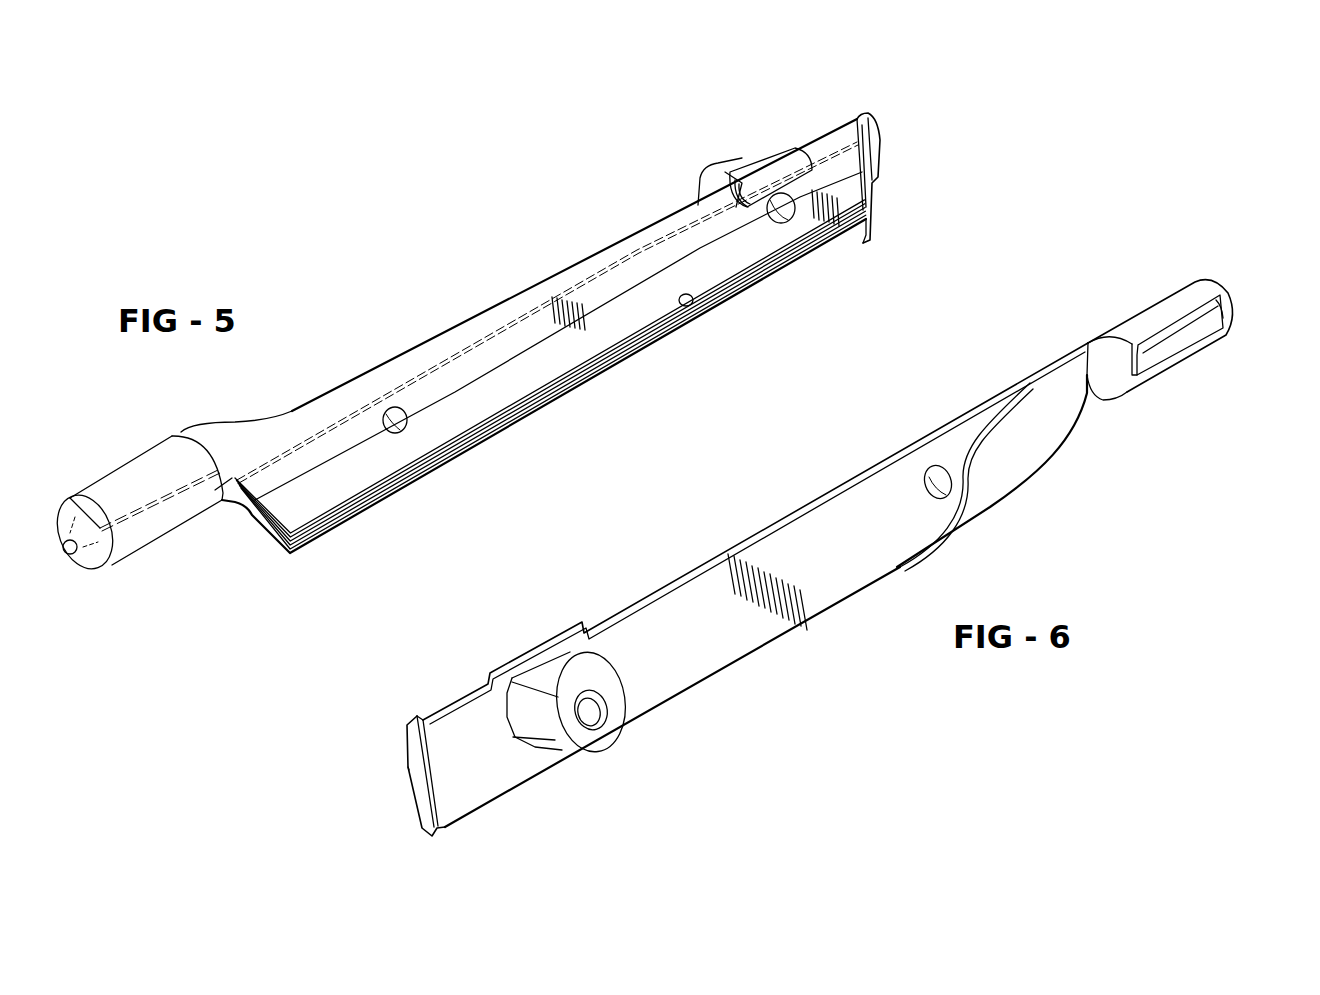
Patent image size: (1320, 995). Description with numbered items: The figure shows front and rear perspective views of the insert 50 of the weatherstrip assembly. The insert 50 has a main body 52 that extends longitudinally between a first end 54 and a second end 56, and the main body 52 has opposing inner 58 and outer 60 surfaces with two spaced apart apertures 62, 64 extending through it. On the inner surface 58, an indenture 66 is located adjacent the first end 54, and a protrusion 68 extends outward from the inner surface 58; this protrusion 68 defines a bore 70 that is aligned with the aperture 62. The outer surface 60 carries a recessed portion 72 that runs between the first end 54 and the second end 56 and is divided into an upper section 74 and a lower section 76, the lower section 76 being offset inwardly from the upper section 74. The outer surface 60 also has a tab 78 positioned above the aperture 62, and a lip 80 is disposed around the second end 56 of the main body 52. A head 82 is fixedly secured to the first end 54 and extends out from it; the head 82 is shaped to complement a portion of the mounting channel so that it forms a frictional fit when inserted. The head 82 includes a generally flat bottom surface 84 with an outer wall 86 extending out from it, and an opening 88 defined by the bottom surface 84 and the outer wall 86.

In FIG. 5, the insert 50 is at (483, 297).
In FIG. 6, the insert 50 is at (692, 713).
In FIG. 5, the main body 52 is at (585, 260).
In FIG. 6, the main body 52 is at (837, 603).
In FIG. 5, the first end 54 is at (253, 520).
In FIG. 6, the first end 54 is at (1083, 350).
In FIG. 5, the second end 56 is at (860, 130).
In FIG. 6, the second end 56 is at (448, 828).
In FIG. 6, the inner surface 58 is at (843, 543).
In FIG. 5, the outer surface 60 is at (543, 405).
In FIG. 5, the aperture 62 is at (784, 221).
In FIG. 5, the aperture 64 is at (393, 432).
In FIG. 6, the aperture 64 is at (937, 477).
In FIG. 6, the indenture 66 is at (1040, 437).
In FIG. 5, the protrusion 68 is at (721, 164).
In FIG. 6, the protrusion 68 is at (597, 658).
In FIG. 6, the bore 70 is at (585, 725).
In FIG. 5, the recessed portion 72 is at (688, 305).
In FIG. 5, the upper section 74 is at (458, 377).
In FIG. 5, the lower section 76 is at (720, 273).
In FIG. 5, the tab 78 is at (790, 143).
In FIG. 5, the lip 80 is at (878, 121).
In FIG. 6, the lip 80 is at (416, 716).
In FIG. 5, the head 82 is at (157, 477).
In FIG. 6, the head 82 is at (1173, 302).
In FIG. 6, the bottom surface 84 is at (1193, 360).
In FIG. 6, the outer wall 86 is at (1216, 282).
In FIG. 6, the opening 88 is at (1218, 305).